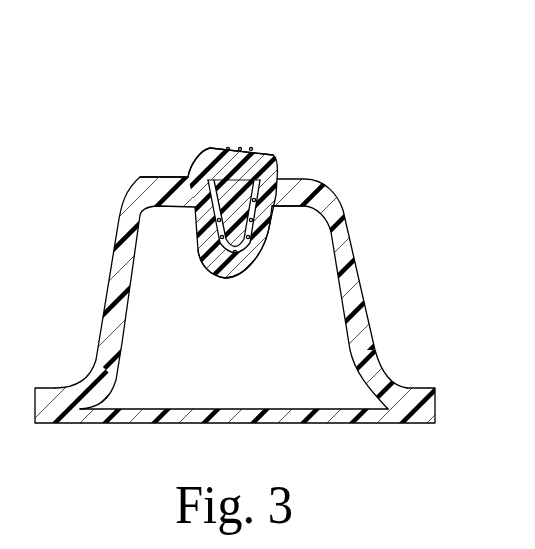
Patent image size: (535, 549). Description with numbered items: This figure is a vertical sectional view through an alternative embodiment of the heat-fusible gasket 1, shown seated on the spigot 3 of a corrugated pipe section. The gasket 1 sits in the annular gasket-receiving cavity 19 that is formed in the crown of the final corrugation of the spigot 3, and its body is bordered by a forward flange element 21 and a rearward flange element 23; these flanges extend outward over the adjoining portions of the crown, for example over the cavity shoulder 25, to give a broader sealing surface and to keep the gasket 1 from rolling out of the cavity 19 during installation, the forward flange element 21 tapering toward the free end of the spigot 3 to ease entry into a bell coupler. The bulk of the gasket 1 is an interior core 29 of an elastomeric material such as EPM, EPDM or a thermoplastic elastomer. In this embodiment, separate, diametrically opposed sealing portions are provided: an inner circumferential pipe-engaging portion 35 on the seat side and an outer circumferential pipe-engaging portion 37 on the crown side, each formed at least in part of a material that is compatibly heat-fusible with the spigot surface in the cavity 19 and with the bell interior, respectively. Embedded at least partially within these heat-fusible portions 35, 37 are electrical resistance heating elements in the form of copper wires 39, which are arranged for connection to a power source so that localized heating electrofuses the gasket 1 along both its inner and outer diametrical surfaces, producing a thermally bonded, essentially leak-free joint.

The gasket 1 is at (212, 110).
The spigot 3 is at (393, 297).
The gasket-receiving cavity 19 is at (199, 258).
The forward flange element 21 is at (192, 168).
The rearward flange element 23 is at (279, 166).
The cavity shoulder 25 is at (190, 178).
The interior core 29 is at (266, 188).
The inner circumferential pipe-engaging portion 35 is at (270, 252).
The outer circumferential pipe-engaging portion 37 is at (259, 145).
The copper wires 39 is at (228, 148).